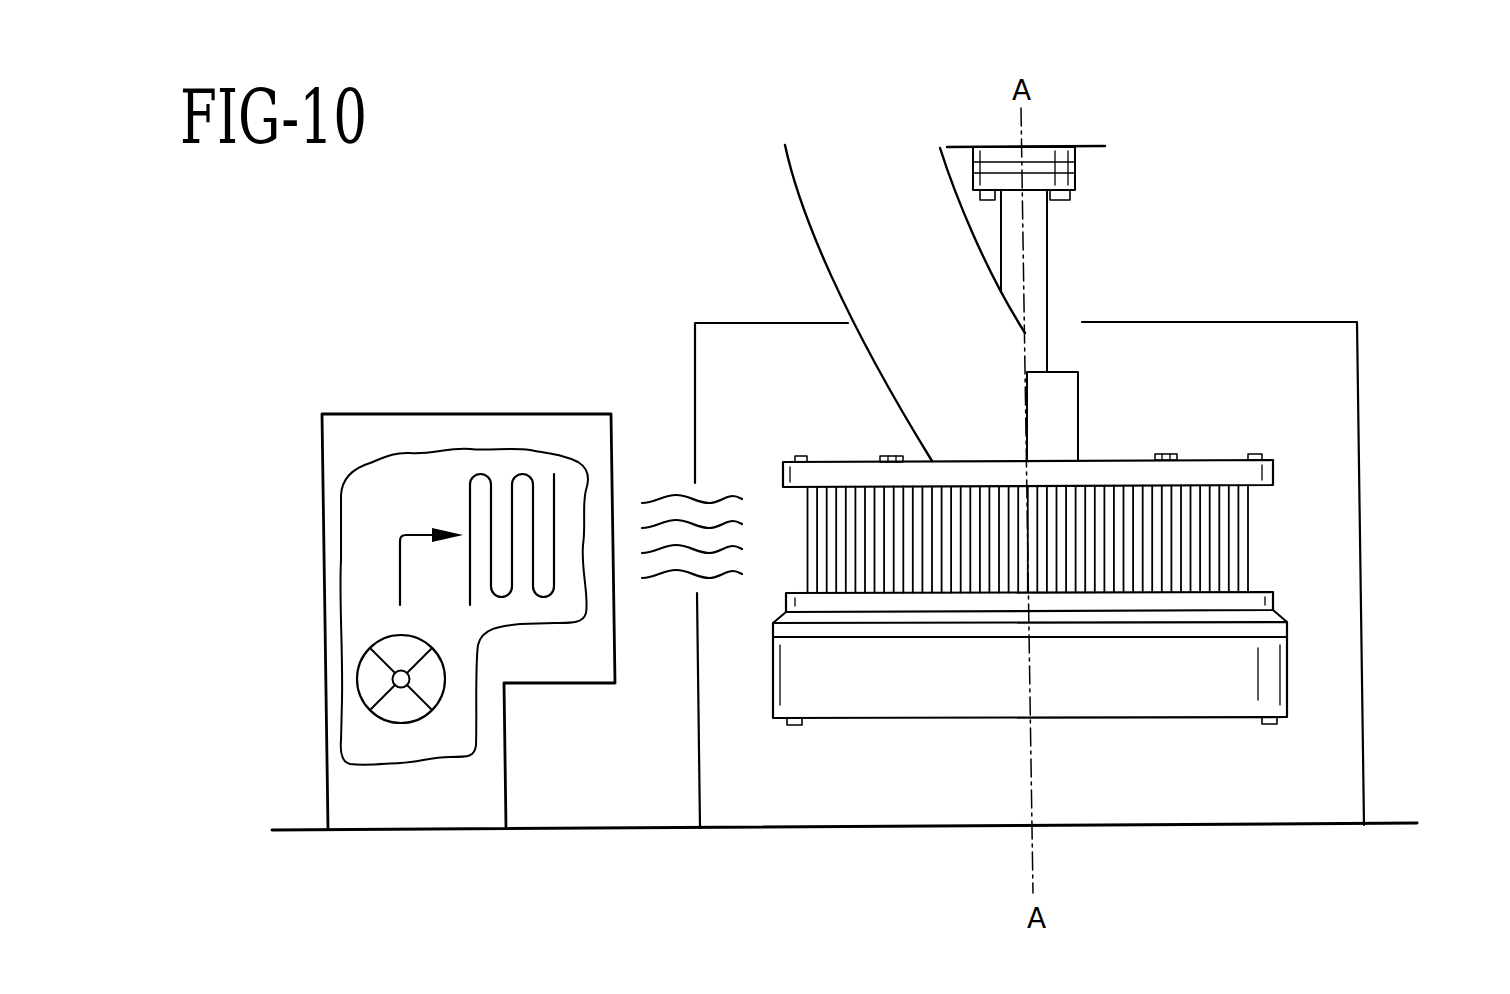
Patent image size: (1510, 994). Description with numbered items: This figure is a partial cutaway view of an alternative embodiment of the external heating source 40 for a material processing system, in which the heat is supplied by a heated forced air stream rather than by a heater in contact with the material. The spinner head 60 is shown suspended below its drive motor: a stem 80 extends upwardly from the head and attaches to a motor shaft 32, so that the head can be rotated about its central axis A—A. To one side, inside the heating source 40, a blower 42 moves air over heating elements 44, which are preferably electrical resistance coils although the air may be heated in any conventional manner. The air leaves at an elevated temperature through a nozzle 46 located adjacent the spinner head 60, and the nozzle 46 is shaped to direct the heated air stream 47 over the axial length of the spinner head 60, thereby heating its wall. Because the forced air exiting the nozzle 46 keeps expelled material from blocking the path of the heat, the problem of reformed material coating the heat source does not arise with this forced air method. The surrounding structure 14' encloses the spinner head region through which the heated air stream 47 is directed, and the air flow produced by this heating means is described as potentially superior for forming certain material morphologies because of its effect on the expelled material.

The curved housing wall 14' is at (823, 292).
The motor shaft 32 is at (1048, 233).
The external heating source 40 is at (397, 414).
The blower 42 is at (363, 680).
The heating elements 44 is at (553, 500).
The nozzle 46 is at (612, 457).
The heated air stream 47 is at (672, 577).
The spinner head 60 is at (1320, 694).
The stem 80 is at (1078, 400).